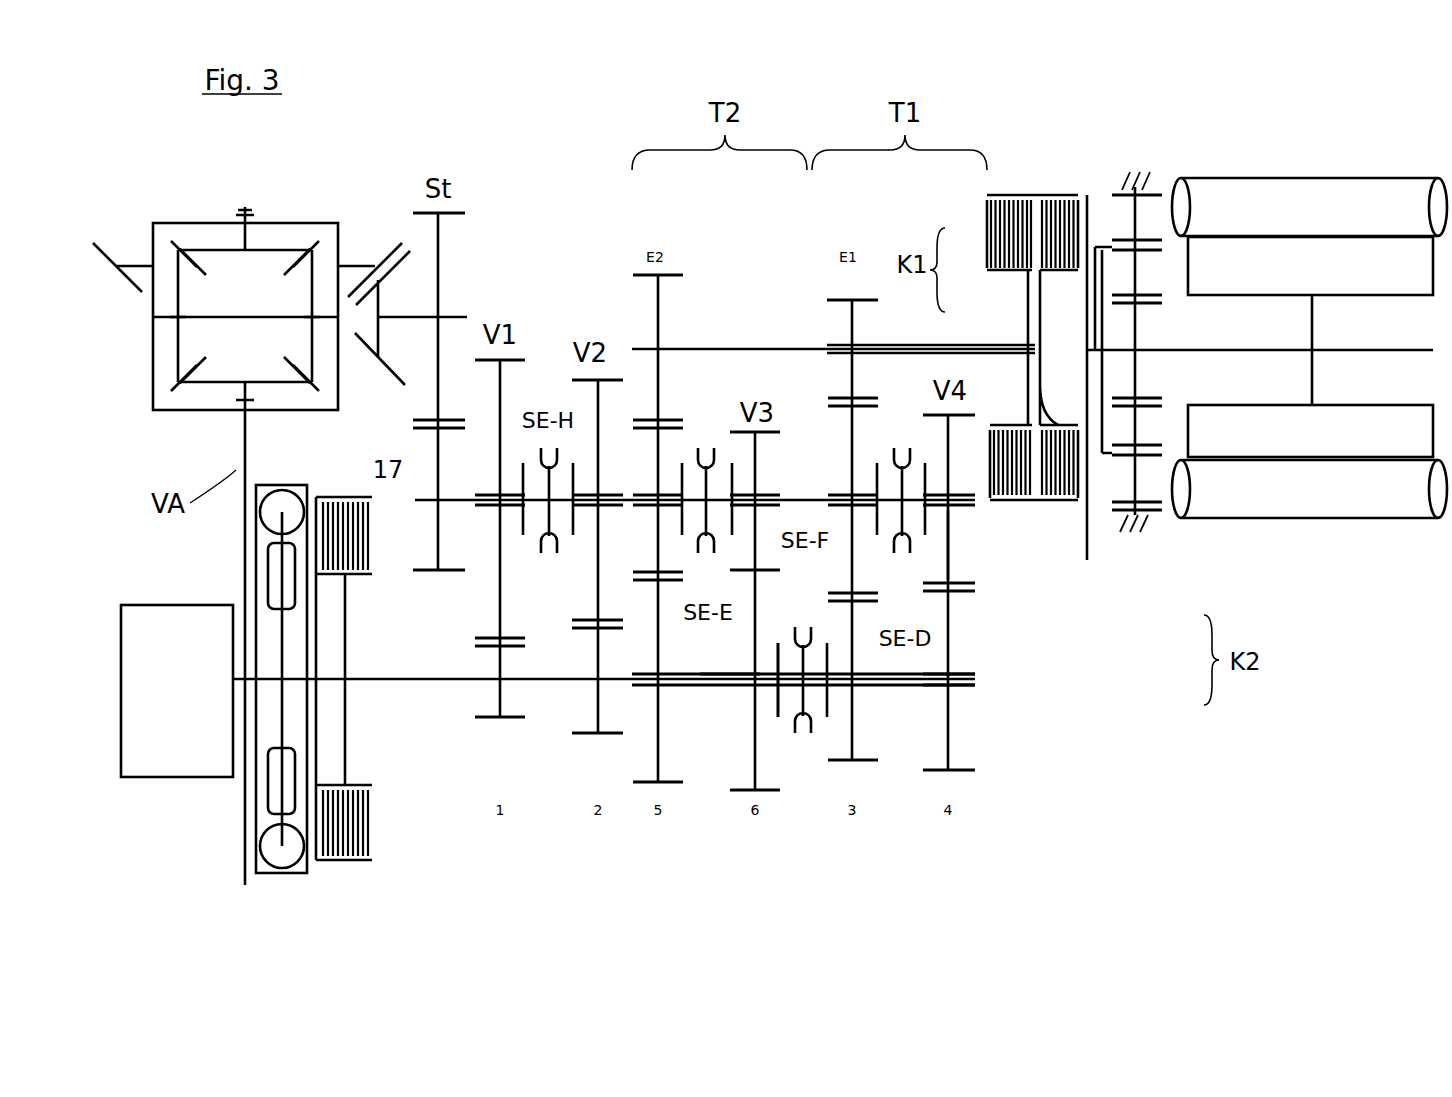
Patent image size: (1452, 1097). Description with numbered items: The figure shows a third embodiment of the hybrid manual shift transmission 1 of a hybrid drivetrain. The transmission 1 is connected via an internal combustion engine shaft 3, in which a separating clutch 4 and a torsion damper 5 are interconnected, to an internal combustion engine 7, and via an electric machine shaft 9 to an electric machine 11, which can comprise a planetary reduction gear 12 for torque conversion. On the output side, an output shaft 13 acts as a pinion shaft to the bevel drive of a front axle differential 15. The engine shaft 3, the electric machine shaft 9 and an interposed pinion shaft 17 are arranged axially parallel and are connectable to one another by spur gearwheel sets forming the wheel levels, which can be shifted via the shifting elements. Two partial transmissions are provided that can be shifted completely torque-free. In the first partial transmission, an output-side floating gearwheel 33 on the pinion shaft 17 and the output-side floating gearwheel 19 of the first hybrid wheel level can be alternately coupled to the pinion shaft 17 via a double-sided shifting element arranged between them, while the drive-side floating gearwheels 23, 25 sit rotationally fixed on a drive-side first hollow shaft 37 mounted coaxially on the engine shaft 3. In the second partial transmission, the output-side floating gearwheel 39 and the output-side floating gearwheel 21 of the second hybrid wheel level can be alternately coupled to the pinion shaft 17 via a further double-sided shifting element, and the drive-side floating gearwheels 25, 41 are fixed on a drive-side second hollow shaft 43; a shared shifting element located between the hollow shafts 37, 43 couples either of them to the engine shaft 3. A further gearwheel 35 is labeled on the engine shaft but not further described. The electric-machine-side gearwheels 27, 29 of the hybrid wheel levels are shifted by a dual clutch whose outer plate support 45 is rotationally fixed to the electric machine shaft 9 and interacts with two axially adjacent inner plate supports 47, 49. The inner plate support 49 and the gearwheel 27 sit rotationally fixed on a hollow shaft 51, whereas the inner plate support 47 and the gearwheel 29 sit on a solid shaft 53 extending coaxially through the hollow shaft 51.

The manual shift transmission 1 is at (1114, 146).
The internal combustion engine shaft 3 is at (430, 682).
The separating clutch 4 is at (350, 862).
The torsion damper 5 is at (280, 876).
The internal combustion engine 7 is at (176, 704).
The electric machine shaft 9 is at (1260, 351).
The electric machine 11 is at (1335, 176).
The planetary reduction gear 12 is at (1118, 188).
The output shaft 13 is at (455, 318).
The front axle differential 15 is at (200, 222).
The pinion shaft 17 is at (695, 500).
The output-side floating gearwheel 19 is at (847, 434).
The output-side floating gearwheel 21 is at (652, 457).
The drive-side floating gearwheel 23 is at (840, 762).
The drive-side floating gearwheel 25 is at (670, 784).
The electric-machine-side gearwheel 27 is at (868, 296).
The electric-machine-side gearwheel 29 is at (655, 322).
The output-side floating gearwheel 33 is at (958, 547).
The gear 35 is at (950, 627).
The drive-side first hollow shaft 37 is at (958, 672).
The output-side floating gearwheel 39 is at (742, 430).
The drive-side floating gearwheel 41 is at (764, 610).
The drive-side second hollow shaft 43 is at (712, 688).
The outer plate support 45 is at (988, 236).
The inner plate support 47 is at (1067, 500).
The inner plate support 49 is at (1026, 300).
The hollow shaft 51 is at (838, 342).
The solid shaft 53 is at (712, 346).